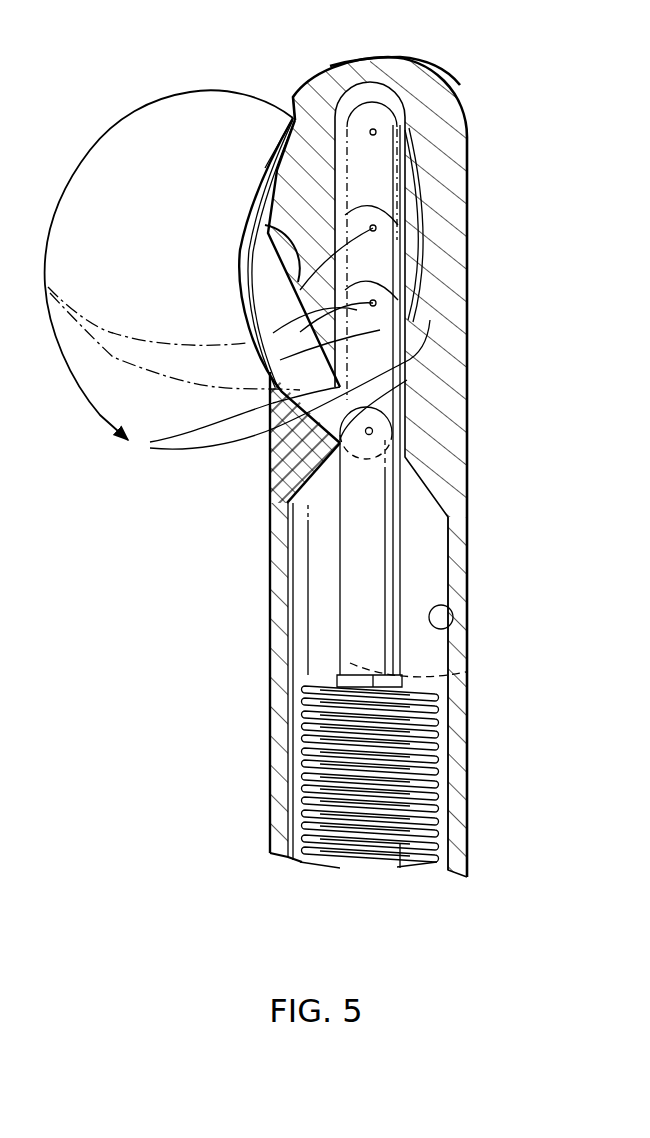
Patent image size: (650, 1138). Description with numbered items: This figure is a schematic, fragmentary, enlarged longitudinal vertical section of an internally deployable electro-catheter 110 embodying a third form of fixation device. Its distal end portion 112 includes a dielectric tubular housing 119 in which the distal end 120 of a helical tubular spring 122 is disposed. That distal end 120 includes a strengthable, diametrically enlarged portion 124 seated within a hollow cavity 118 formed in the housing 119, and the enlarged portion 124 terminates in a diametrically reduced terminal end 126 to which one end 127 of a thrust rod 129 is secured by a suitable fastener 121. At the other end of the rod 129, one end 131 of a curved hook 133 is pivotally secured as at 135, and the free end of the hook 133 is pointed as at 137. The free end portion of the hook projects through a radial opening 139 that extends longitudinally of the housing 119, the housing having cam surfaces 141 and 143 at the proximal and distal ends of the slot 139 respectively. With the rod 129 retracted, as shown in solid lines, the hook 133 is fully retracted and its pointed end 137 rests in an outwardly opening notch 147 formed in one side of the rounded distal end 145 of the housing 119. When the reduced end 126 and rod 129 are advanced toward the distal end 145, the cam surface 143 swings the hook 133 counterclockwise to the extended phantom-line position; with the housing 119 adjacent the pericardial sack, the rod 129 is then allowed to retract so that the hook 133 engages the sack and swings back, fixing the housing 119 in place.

The internally deployable electro-catheter 110 is at (474, 320).
The distal end portion 112 is at (278, 625).
The hollow cavity 118 is at (453, 618).
The dielectric tubular housing 119 is at (468, 492).
The distal end of helical tubular spring 120 is at (340, 868).
The fastener 121 is at (466, 672).
The helical tubular spring 122 is at (400, 868).
The diametrically enlarged portion 124 is at (298, 770).
The diametrically reduced terminal end 126 is at (438, 703).
The end of thrust rod 127 is at (290, 667).
The thrust rod 129 is at (347, 553).
The end of curved hook 131 is at (400, 373).
The curved hook 133 is at (245, 305).
The pivot 135 is at (372, 430).
The pointed end 137 is at (293, 125).
The radial opening 139 is at (267, 403).
The cam surface 141 is at (273, 482).
The cam surface 143 is at (275, 237).
The rounded distal end 145 is at (377, 57).
The outwardly opening notch 147 is at (285, 116).